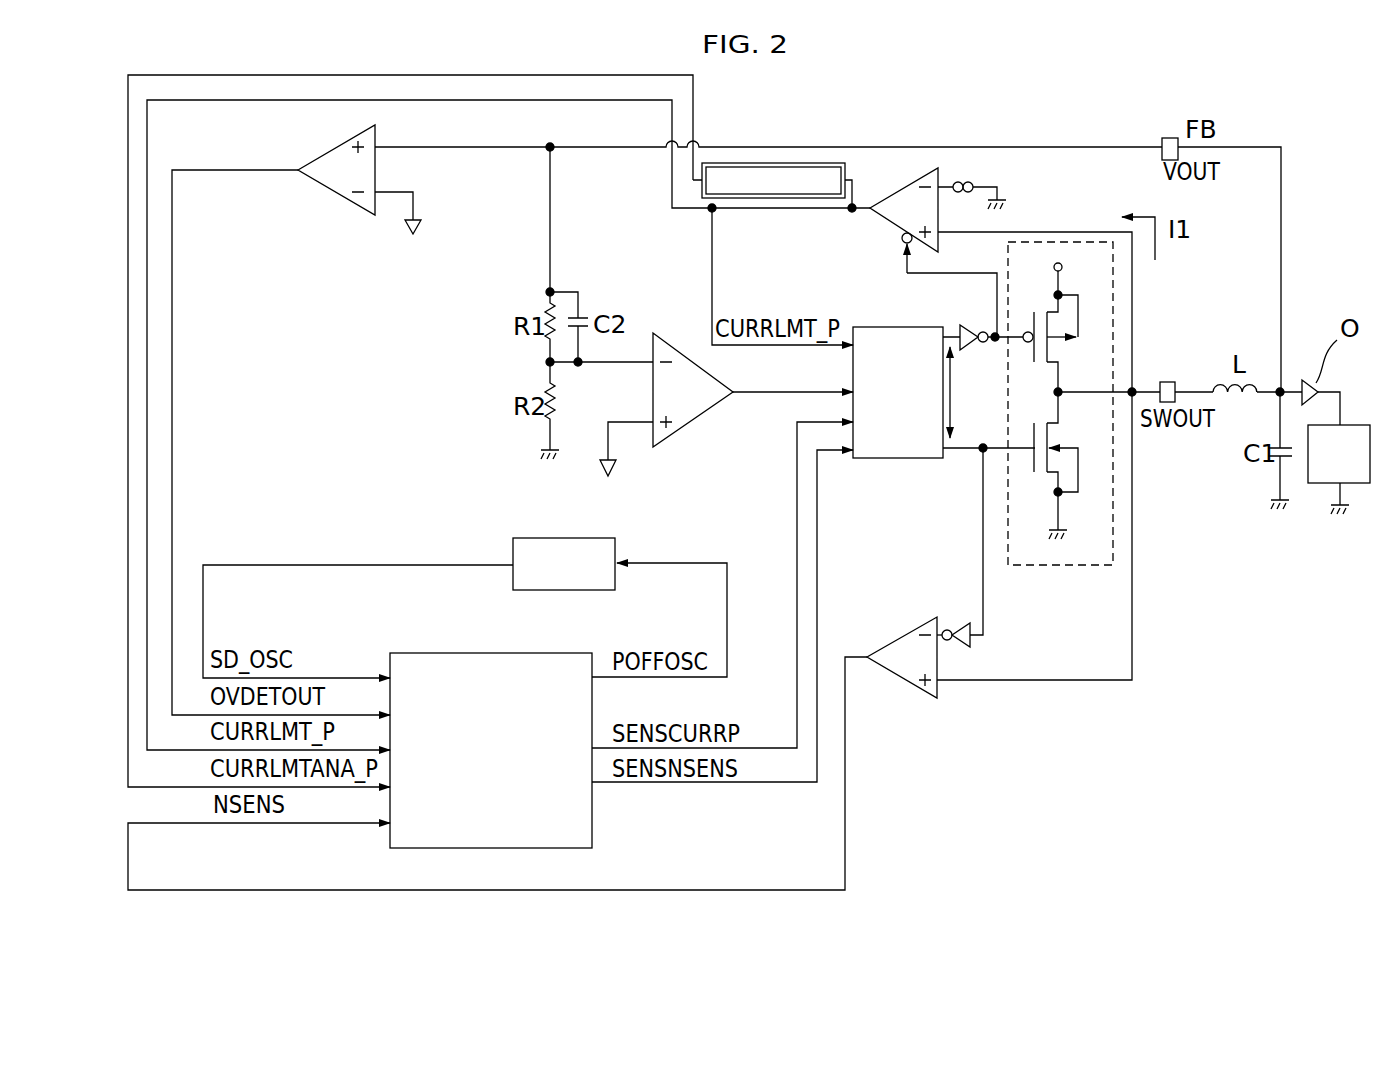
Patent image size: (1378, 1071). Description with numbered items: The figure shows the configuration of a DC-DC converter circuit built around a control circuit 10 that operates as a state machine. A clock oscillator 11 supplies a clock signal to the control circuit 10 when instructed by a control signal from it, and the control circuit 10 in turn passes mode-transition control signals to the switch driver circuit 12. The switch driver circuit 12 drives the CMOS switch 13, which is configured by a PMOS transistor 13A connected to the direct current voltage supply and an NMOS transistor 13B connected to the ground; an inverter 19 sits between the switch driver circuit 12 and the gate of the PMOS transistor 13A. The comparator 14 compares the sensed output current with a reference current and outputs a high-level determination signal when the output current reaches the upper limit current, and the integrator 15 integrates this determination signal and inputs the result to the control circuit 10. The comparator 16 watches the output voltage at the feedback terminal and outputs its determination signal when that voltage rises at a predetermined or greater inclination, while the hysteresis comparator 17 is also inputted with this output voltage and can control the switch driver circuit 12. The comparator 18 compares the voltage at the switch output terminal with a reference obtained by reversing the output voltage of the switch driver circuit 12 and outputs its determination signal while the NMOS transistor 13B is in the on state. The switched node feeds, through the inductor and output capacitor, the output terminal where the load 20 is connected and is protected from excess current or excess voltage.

The control circuit 10 is at (592, 823).
The clock oscillator 11 is at (553, 538).
The switch driver circuit 12 is at (900, 460).
The CMOS switch 13 is at (1100, 435).
The PMOS transistor 13A is at (1080, 347).
The NMOS transistor 13B is at (1065, 437).
The comparator (CURRLMT) 14 is at (903, 190).
The integrator 15 is at (805, 163).
The comparator (OVDET) 16 is at (343, 197).
The hysteresis comparator 17 is at (660, 447).
The comparator (NSENS) 18 is at (905, 632).
The inverter 19 is at (970, 352).
The load 20 is at (1352, 425).